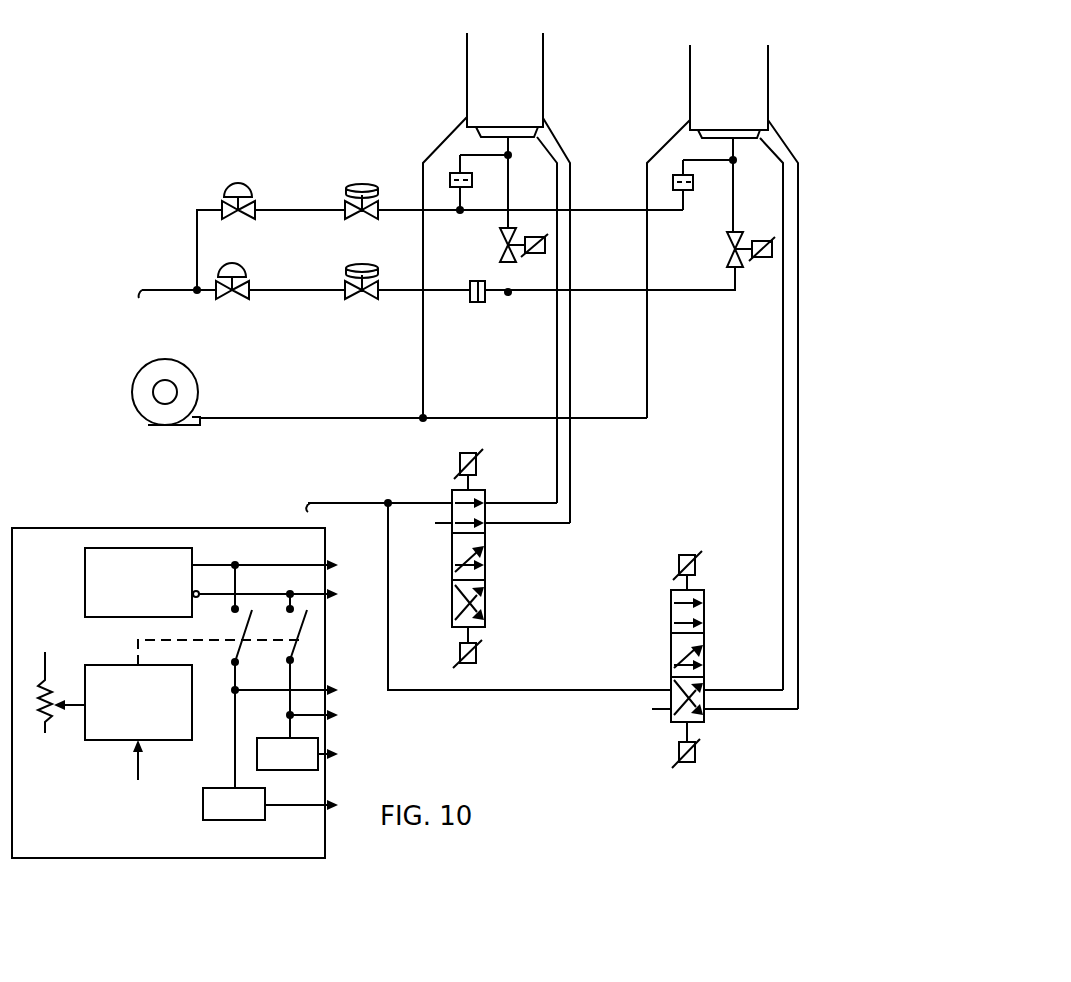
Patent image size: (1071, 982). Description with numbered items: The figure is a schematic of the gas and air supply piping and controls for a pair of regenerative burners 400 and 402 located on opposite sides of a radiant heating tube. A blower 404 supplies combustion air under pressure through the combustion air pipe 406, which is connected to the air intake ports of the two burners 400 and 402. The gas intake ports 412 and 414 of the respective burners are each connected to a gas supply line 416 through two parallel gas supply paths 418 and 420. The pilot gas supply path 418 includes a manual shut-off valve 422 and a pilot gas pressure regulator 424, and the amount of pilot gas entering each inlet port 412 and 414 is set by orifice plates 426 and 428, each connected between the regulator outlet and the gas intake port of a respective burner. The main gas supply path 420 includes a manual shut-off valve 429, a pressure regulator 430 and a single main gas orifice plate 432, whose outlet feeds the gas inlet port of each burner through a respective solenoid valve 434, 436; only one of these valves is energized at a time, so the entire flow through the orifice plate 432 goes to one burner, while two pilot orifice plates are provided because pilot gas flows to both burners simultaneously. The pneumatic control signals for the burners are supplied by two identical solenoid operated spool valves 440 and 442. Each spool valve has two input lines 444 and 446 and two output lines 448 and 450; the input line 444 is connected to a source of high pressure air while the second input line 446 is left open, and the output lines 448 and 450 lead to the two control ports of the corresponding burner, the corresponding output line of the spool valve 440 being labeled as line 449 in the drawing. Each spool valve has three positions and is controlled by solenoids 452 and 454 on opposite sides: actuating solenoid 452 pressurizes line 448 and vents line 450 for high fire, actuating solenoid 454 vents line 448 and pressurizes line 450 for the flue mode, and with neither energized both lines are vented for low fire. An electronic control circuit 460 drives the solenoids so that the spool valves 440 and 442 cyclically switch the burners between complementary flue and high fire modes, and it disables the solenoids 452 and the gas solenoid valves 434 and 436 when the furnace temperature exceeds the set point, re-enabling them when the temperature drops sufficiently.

The burner 400 is at (538, 112).
The burner 402 is at (760, 112).
The blower 404 is at (150, 427).
The combustion air pipe 406 is at (298, 420).
The gas intake port 412 is at (511, 150).
The gas intake port 414 is at (737, 152).
The gas supply line 416 is at (182, 295).
The pilot gas supply path 418 is at (340, 182).
The main gas supply path 420 is at (323, 330).
The manual shut-off valve 422 is at (246, 218).
The pilot gas pressure regulator 424 is at (370, 218).
The orifice plate 426 is at (472, 176).
The orifice plate 428 is at (693, 180).
The manual shut-off valve 429 is at (250, 276).
The pressure regulator 430 is at (362, 299).
The main gas orifice plate 432 is at (488, 300).
The solenoid valve 434 is at (545, 244).
The solenoid valve 436 is at (772, 249).
The spool valve 440 is at (500, 572).
The spool valve 442 is at (720, 633).
The input line 444 is at (428, 500).
The input line 446 is at (440, 525).
The output line 448 is at (775, 673).
The air line 449 is at (532, 502).
The output line 450 is at (553, 526).
The solenoid 452 is at (479, 452).
The solenoid 454 is at (474, 665).
The electronic control circuit 460 is at (172, 858).